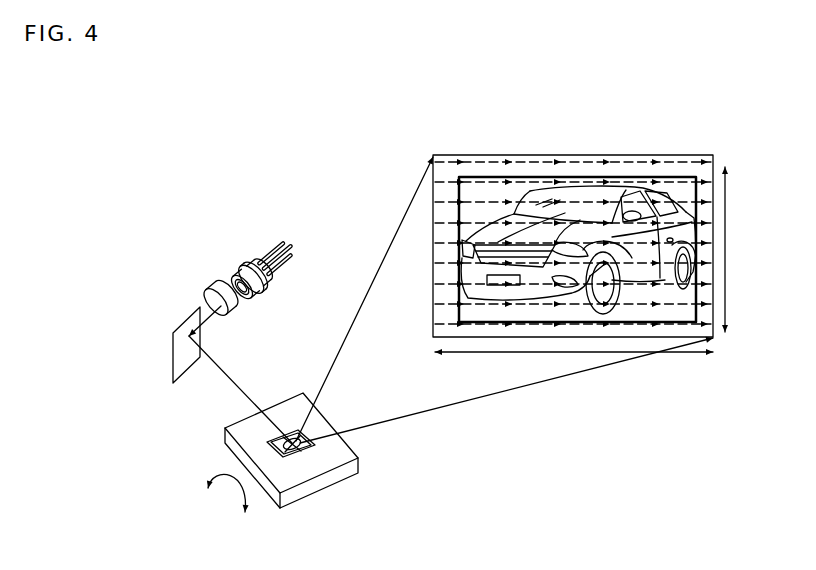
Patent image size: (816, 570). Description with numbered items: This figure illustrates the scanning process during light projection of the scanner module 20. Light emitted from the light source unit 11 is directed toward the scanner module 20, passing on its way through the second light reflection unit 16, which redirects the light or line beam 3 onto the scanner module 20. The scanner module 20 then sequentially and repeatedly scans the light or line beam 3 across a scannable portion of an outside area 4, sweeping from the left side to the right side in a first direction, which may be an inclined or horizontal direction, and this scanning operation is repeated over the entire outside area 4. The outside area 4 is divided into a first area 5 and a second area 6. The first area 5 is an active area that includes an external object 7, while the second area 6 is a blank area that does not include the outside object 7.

The laser beam 3 is at (505, 299).
The outside area 4 is at (605, 154).
The first area 5 is at (534, 312).
The second area 6 is at (592, 333).
The external object 7 is at (693, 235).
The light source unit 11 is at (236, 272).
The second light reflection unit 16 is at (185, 322).
The scanner module 20 is at (310, 468).